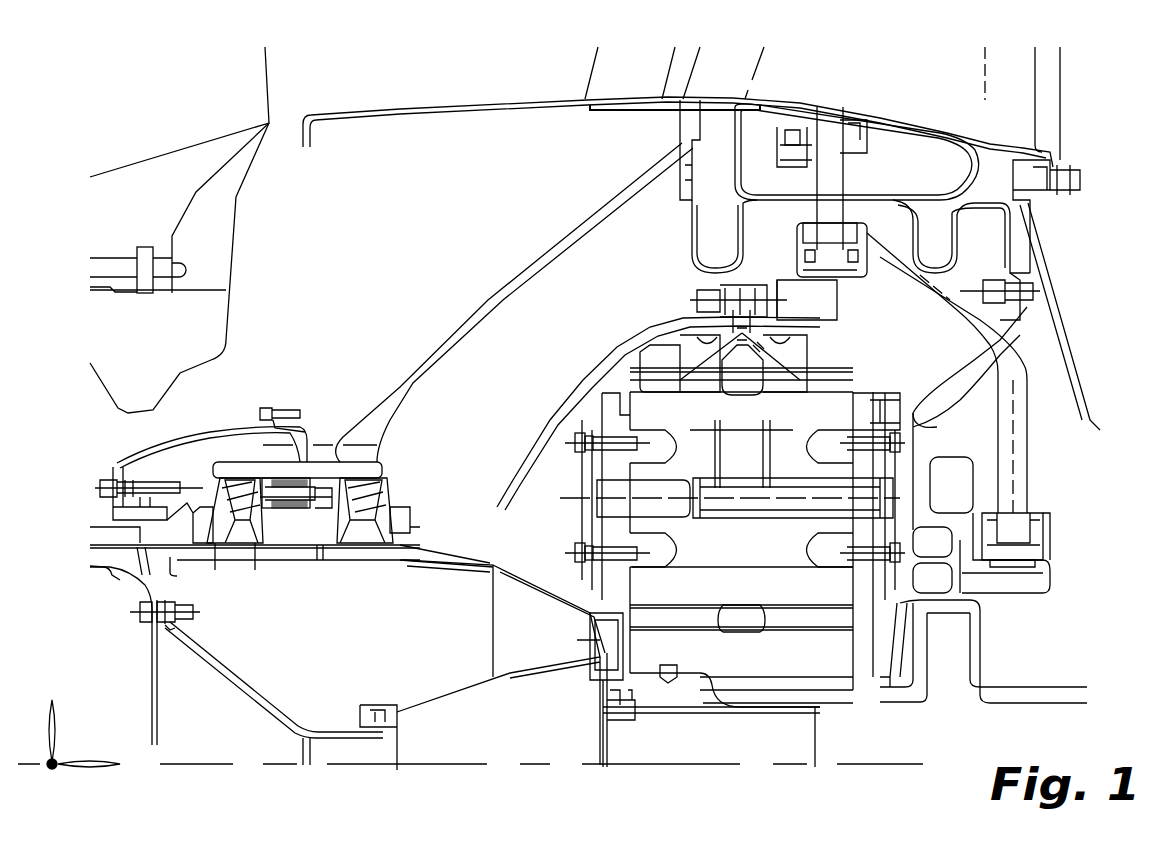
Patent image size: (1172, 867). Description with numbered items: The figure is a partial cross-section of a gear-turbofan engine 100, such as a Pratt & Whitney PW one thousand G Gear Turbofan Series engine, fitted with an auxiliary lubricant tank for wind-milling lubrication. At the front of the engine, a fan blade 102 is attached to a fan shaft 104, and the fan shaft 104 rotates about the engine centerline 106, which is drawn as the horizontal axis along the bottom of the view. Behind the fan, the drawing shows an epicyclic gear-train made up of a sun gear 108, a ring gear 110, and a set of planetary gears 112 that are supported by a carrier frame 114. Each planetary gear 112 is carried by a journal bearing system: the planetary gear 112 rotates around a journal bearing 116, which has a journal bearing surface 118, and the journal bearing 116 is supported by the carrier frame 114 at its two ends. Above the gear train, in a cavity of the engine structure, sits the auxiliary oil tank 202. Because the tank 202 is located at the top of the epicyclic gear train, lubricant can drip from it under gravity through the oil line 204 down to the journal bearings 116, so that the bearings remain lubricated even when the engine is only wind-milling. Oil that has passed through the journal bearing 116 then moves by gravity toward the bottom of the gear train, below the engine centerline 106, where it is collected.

The gear-turbofan engine 100 is at (1082, 85).
The fan blade 102 is at (175, 117).
The fan shaft 104 is at (110, 565).
The engine centerline 106 is at (193, 765).
The sun gear 108 is at (830, 655).
The ring gear 110 is at (668, 358).
The planetary gear 112 is at (818, 593).
The carrier frame 114 is at (963, 595).
The journal bearing 116 is at (843, 473).
The journal bearing surface 118 is at (660, 430).
The auxiliary oil tank 202 is at (758, 157).
The oil line 204 is at (1025, 370).